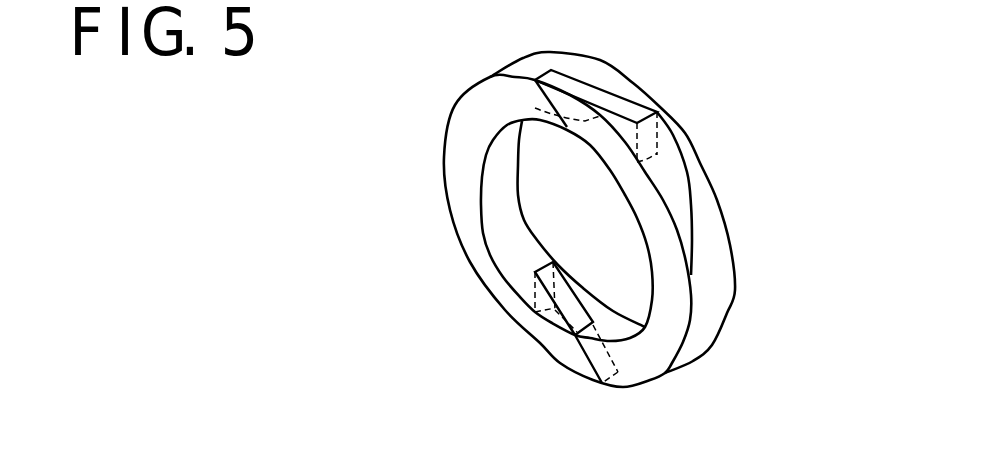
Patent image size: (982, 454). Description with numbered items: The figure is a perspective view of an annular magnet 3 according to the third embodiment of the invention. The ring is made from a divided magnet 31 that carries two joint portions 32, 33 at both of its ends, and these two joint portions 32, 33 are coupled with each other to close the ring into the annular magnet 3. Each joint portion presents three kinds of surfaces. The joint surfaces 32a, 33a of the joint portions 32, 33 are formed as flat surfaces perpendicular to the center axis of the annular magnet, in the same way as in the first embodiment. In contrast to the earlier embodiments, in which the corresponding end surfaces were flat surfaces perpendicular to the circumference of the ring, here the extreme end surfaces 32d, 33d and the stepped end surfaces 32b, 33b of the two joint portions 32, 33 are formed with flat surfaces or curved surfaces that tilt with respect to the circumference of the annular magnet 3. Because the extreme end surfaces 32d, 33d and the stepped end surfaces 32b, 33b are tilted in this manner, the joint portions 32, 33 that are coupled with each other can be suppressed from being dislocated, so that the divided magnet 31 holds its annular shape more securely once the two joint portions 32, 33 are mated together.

The annular magnet 3 is at (834, 52).
The divided magnet 31 is at (447, 110).
The joint portion 32 is at (643, 73).
The joint portion 33 is at (629, 92).
The joint surface 32a is at (535, 287).
The stepped end surface 32b is at (582, 367).
The extreme end surface 32d is at (650, 160).
The joint surface 33a is at (597, 100).
The stepped end surface 33b is at (583, 110).
The extreme end surface 33d is at (535, 108).